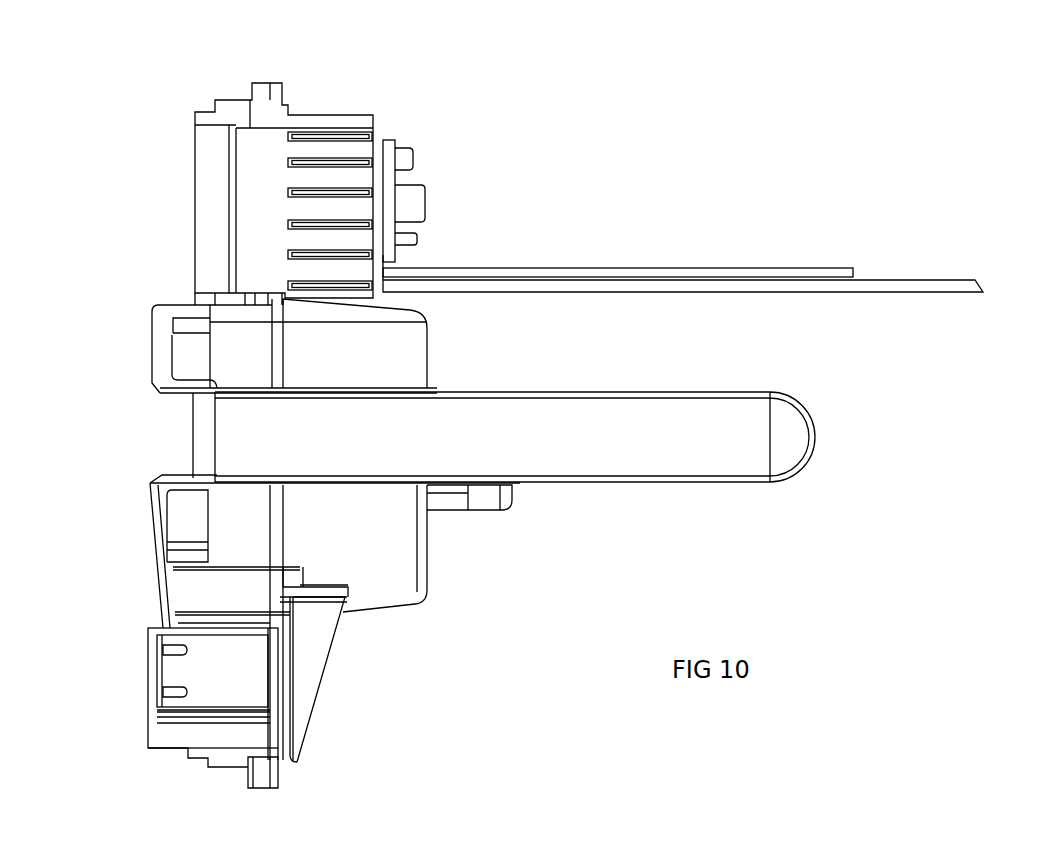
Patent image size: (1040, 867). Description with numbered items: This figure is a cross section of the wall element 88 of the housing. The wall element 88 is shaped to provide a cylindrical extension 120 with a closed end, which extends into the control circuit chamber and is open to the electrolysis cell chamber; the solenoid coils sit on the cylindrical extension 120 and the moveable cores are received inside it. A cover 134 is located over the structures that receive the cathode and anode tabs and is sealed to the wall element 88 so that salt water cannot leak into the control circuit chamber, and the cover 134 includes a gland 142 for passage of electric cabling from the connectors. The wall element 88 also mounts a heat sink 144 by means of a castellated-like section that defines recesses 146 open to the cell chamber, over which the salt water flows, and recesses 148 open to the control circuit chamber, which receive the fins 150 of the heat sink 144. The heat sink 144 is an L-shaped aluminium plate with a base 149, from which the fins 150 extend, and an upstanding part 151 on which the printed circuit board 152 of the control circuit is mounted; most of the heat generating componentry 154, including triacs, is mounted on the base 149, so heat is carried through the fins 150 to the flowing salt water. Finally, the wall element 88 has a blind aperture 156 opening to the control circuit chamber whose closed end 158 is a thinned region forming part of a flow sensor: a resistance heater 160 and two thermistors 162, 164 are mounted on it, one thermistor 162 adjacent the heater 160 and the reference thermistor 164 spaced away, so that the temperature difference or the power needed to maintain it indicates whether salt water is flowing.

The wall element 88 is at (513, 427).
The cylindrical extension 120 is at (688, 462).
The cover 134 is at (400, 540).
The gland 142 is at (483, 493).
The heat sink 144 is at (683, 272).
The recesses 146 is at (288, 270).
The recesses 148 is at (332, 158).
The base 149 is at (380, 178).
The fins 150 is at (373, 160).
The upstanding part 151 is at (917, 280).
The printed circuit board 152 is at (610, 272).
The heat generating componentry 154 is at (413, 238).
The blind aperture 156 is at (250, 690).
The closed end 158 is at (150, 682).
The resistance heater 160 is at (180, 667).
The thermistor 162 is at (163, 650).
The thermistor 164 is at (170, 745).